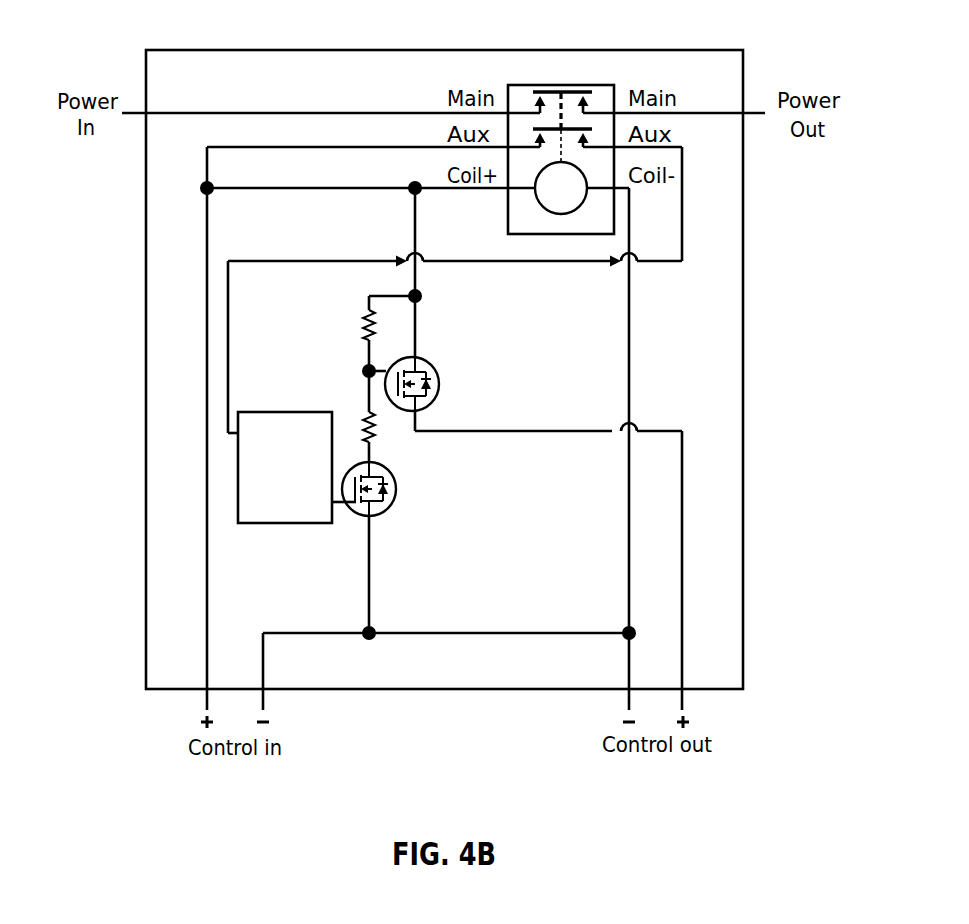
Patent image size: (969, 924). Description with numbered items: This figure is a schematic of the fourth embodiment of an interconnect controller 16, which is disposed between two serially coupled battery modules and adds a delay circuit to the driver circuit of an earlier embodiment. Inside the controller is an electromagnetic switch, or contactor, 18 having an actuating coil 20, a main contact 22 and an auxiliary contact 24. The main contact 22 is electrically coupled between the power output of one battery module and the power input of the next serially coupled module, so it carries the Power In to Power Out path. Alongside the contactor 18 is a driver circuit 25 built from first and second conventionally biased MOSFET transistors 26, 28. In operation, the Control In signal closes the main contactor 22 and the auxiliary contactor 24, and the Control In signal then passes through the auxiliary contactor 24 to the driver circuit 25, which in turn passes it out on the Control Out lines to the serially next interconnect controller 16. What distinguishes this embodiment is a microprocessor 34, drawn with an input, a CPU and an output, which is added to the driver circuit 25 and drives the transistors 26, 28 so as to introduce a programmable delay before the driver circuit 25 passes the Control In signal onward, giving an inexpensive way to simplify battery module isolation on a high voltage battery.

The interconnect controller 16 is at (745, 370).
The electromagnetic switch 18 is at (568, 235).
The actuating coil 20 is at (540, 206).
The main contact 22 is at (587, 90).
The auxiliary contact 24 is at (588, 136).
The driver circuit 25 is at (422, 474).
The first MOSFET transistor 26 is at (386, 507).
The second MOSFET transistor 28 is at (439, 385).
The microprocessor 34 is at (285, 525).